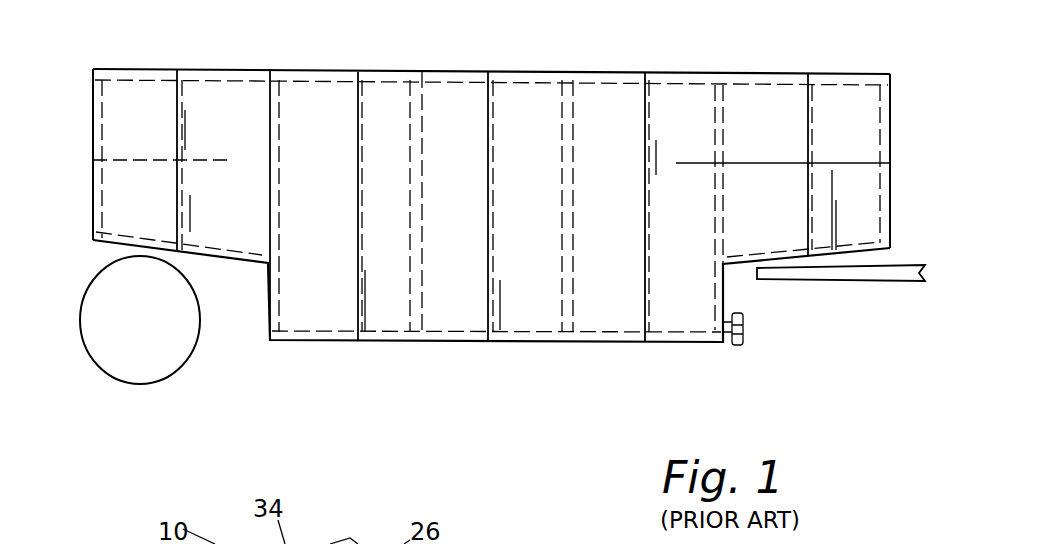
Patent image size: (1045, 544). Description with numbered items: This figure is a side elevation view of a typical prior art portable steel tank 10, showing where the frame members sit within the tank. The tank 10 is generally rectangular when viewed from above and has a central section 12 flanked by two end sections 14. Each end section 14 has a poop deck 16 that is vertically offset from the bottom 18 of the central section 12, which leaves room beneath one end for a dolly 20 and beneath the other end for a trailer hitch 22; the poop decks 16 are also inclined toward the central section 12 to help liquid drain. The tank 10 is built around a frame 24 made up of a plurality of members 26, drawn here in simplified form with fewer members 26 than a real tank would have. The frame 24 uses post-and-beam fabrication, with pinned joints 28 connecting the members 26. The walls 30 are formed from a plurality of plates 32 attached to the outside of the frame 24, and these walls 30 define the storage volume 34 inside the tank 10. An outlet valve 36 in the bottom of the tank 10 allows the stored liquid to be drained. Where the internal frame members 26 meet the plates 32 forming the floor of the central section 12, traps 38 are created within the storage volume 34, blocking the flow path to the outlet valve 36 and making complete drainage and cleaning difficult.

The portable steel tank 10 is at (295, 68).
The central section 12 is at (493, 318).
The end sections 14 is at (170, 68).
The poop decks 16 is at (125, 242).
The bottom 18 is at (350, 341).
The dolly 20 is at (135, 386).
The trailer hitch 22 is at (890, 282).
The frame 24 is at (505, 71).
The frame members 26 is at (280, 133).
The pinned joints 28 is at (424, 69).
The walls 30 is at (620, 107).
The plates 32 is at (823, 132).
The storage volume 34 is at (220, 107).
The outlet valve 36 is at (748, 330).
The traps 38 is at (260, 246).